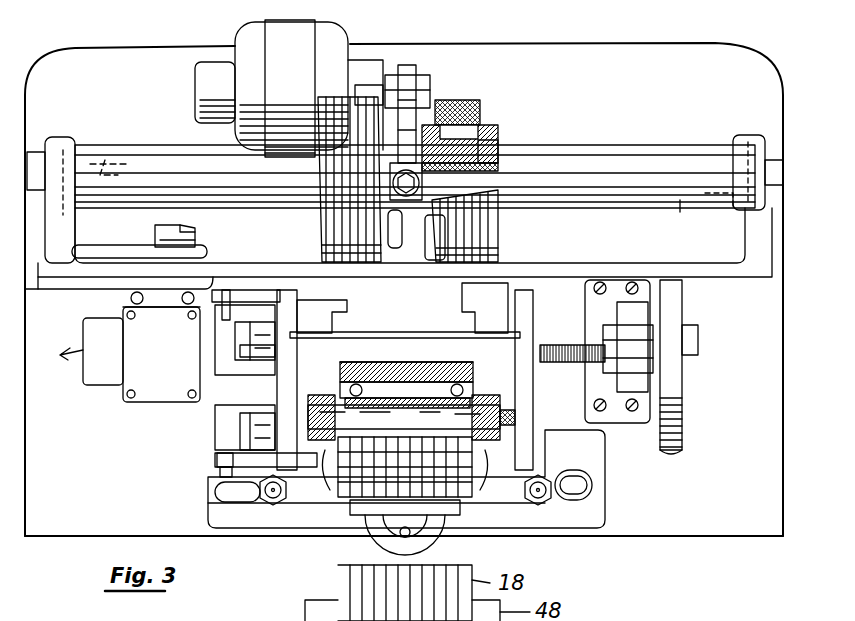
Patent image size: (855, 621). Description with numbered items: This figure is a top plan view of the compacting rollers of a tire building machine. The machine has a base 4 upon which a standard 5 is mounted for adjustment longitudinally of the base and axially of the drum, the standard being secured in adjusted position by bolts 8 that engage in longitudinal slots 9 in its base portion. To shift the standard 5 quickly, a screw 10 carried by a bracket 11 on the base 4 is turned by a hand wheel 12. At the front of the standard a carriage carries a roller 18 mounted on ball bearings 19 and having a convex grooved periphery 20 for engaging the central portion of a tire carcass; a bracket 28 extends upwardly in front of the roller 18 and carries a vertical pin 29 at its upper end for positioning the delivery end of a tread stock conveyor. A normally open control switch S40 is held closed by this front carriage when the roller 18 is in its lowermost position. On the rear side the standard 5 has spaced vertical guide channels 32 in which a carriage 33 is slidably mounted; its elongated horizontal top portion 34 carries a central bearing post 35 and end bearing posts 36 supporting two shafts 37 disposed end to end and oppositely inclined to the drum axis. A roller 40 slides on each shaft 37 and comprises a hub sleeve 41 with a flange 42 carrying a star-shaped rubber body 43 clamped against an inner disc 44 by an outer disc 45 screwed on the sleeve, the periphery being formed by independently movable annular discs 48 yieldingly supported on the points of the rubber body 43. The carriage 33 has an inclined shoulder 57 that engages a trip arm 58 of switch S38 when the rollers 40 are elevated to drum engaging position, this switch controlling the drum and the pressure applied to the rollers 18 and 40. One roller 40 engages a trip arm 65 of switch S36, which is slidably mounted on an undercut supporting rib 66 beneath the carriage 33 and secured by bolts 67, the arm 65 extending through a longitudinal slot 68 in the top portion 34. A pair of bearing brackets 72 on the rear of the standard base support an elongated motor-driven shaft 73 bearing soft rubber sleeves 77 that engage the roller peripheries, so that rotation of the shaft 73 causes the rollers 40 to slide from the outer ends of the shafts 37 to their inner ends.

The base 4 is at (690, 515).
The standard 5 is at (285, 382).
The bolts 8 is at (277, 505).
The longitudinal slots 9 is at (228, 490).
The screw 10 is at (560, 362).
The bracket 11 is at (637, 310).
The hand wheel 12 is at (682, 418).
The roller 18 is at (390, 362).
The ball bearings 19 is at (410, 420).
The convex grooved periphery 20 is at (410, 362).
The bracket 28 is at (430, 525).
The vertical pin 29 is at (400, 535).
The vertical guide channels 32 is at (335, 328).
The carriage 33 is at (448, 327).
The horizontal top portion 34 is at (88, 280).
The central bearing post 35 is at (420, 243).
The bearing posts 36 is at (68, 140).
The shafts 37 is at (151, 163).
The roller 40 is at (322, 245).
The hub sleeve 41 is at (472, 168).
The flange 42 is at (420, 215).
The star-shaped rubber body 43 is at (472, 135).
The inner disc 44 is at (422, 105).
The outer disc 45 is at (482, 125).
The annular discs 48 is at (357, 97).
The inclined shoulder 57 is at (224, 290).
The trip arm 58 is at (233, 310).
The trip arm 65 is at (165, 228).
The undercut supporting rib 66 is at (82, 351).
The bolts 67 is at (185, 305).
The longitudinal slot 68 is at (110, 248).
The bearing brackets 72 is at (722, 212).
The shaft 73 is at (108, 160).
The soft rubber sleeves 77 is at (682, 212).
The control switch S36 is at (130, 367).
The control switch S38 is at (227, 363).
The control switch S40 is at (217, 445).